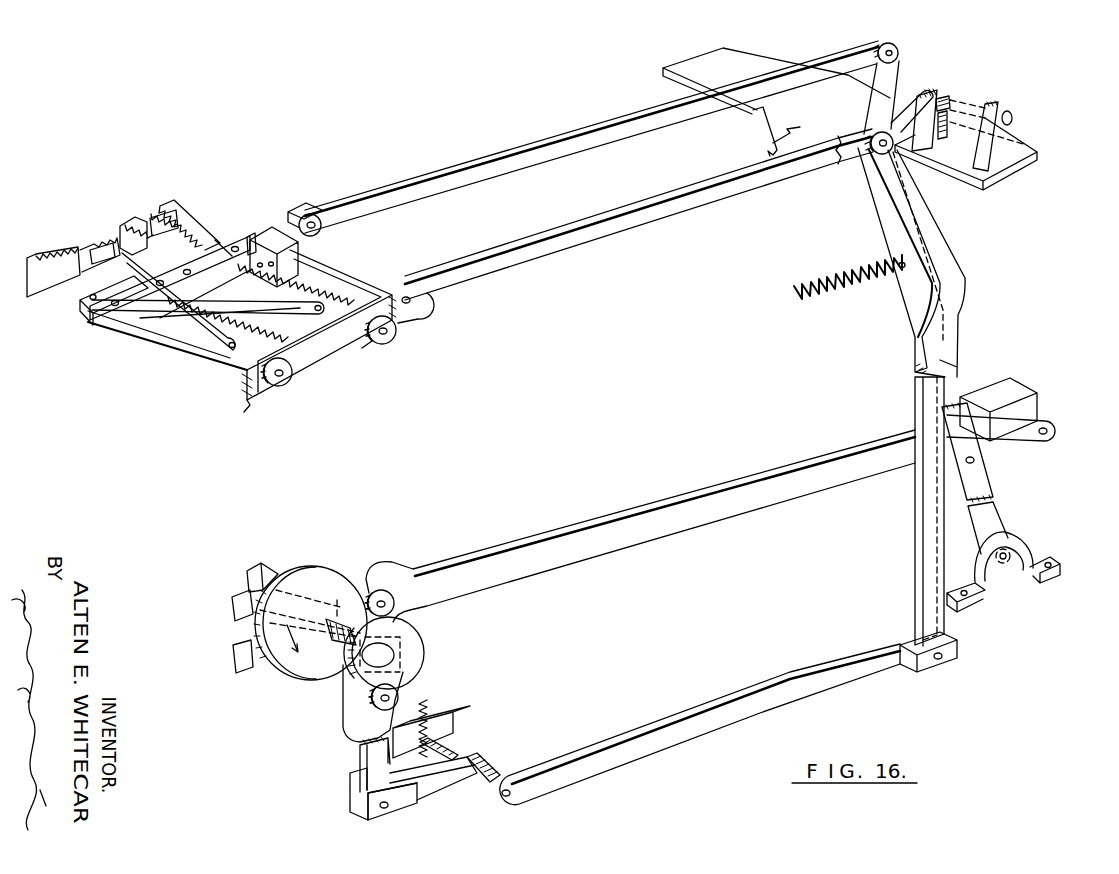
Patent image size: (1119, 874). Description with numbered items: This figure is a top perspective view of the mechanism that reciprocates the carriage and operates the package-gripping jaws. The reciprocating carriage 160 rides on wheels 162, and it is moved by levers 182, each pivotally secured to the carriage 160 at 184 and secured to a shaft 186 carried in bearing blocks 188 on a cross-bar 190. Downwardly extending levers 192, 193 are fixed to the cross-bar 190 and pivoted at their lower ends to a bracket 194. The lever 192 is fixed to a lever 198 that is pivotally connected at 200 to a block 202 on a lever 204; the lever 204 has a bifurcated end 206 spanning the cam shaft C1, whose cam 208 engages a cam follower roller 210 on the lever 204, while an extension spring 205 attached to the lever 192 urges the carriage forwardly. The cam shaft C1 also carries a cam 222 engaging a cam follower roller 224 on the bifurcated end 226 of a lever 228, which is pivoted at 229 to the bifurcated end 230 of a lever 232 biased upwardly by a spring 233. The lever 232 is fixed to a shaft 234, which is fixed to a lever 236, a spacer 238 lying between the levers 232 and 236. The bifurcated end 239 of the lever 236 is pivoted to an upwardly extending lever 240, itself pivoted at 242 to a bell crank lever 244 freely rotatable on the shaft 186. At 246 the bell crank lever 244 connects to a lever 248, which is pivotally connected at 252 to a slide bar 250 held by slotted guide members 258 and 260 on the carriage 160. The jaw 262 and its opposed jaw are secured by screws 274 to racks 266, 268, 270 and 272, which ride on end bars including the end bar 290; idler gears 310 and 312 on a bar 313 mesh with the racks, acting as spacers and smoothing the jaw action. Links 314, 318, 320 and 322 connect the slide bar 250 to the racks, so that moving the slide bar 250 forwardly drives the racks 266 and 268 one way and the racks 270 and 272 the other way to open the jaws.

The reciprocating carriage 160 is at (343, 272).
The wheels 162 is at (286, 378).
The levers 182 is at (568, 240).
The pivot of lever to carriage 184 is at (407, 296).
The shaft 186 is at (953, 102).
The bearing blocks 188 is at (936, 94).
The cross-bar 190 is at (1018, 168).
The downwardly extending lever 192 is at (946, 359).
The downwardly extending lever 193 is at (764, 130).
The bracket 194 is at (1020, 554).
The lever 198 is at (1027, 433).
The pivotal connection 200 is at (1050, 430).
The block 202 is at (1025, 396).
The lever 204 is at (721, 487).
The extension spring 205 is at (822, 300).
The bifurcated end 206 is at (241, 597).
The cam 208 is at (306, 574).
The cam follower roller 210 is at (382, 584).
The cam 222 is at (410, 651).
The cam follower roller 224 is at (404, 691).
The bifurcated end 226 is at (352, 706).
The lever 228 is at (362, 760).
The pivot 229 is at (384, 808).
The bifurcated end 230 is at (368, 808).
The lever 232 is at (444, 783).
The spring 233 is at (435, 708).
The shaft 234 is at (451, 751).
The lever 236 is at (625, 743).
The spacer 238 is at (497, 776).
The bifurcated end 239 is at (944, 661).
The upwardly extending lever 240 is at (925, 531).
The pivot 242 is at (871, 140).
The bell crank lever 244 is at (910, 74).
The pivotal connection 246 is at (897, 49).
The lever 248 is at (562, 145).
The slide bar 250 is at (224, 234).
The pivotal connection 252 is at (318, 218).
The slotted guide member 258 is at (86, 304).
The slotted guide member 260 is at (288, 250).
The jaw 262 is at (84, 254).
The rack 266 is at (168, 210).
The rack 268 is at (246, 375).
The rack 270 is at (141, 226).
The rack 272 is at (57, 256).
The screws 274 is at (110, 240).
The end bar 290 is at (304, 322).
The idler gear 310 is at (251, 250).
The idler gear 312 is at (152, 325).
The bar 313 is at (210, 352).
The link 314 is at (222, 250).
The link 318 is at (385, 356).
The link 320 is at (70, 288).
The link 322 is at (185, 333).
The cam shaft C1 is at (260, 568).